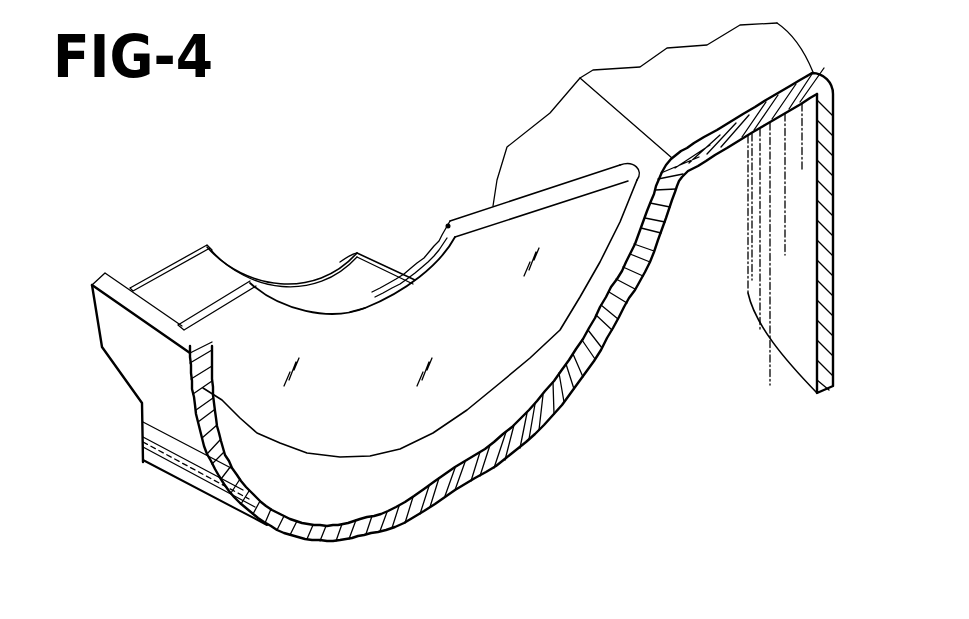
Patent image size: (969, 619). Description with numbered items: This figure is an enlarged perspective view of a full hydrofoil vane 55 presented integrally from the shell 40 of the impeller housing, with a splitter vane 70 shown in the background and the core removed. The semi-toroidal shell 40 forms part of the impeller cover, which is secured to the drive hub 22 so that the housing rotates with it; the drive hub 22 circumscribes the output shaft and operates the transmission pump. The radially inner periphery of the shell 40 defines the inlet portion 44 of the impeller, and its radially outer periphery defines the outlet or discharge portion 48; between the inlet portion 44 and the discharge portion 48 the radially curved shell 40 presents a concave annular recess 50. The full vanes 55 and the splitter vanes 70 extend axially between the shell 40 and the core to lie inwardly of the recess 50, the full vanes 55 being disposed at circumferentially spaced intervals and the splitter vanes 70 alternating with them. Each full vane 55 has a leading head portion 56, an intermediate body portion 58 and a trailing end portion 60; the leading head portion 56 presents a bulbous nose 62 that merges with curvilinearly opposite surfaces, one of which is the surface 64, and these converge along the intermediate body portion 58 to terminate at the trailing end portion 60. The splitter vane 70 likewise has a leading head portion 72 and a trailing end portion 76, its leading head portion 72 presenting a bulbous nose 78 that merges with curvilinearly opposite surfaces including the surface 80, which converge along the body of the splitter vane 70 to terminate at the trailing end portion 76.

The drive hub 22 is at (793, 333).
The semi-toroidal shell portion 40 is at (480, 470).
The inlet portion 44 is at (581, 114).
The outlet or discharge portion 48 is at (178, 297).
The concave annular recess 50 is at (527, 174).
The full vane 55 is at (349, 448).
The leading head portion 56 is at (447, 225).
The intermediate body portion 58 is at (435, 267).
The trailing end portion 60 is at (243, 282).
The bulbous nose 62 is at (635, 162).
The curvilinearly opposite surface 64 is at (561, 297).
The splitter vane 70 is at (277, 277).
The leading head portion 72 is at (357, 260).
The trailing end portion 76 is at (182, 257).
The bulbous nose 78 is at (380, 265).
The curvilinearly opposite surface 80 is at (332, 293).